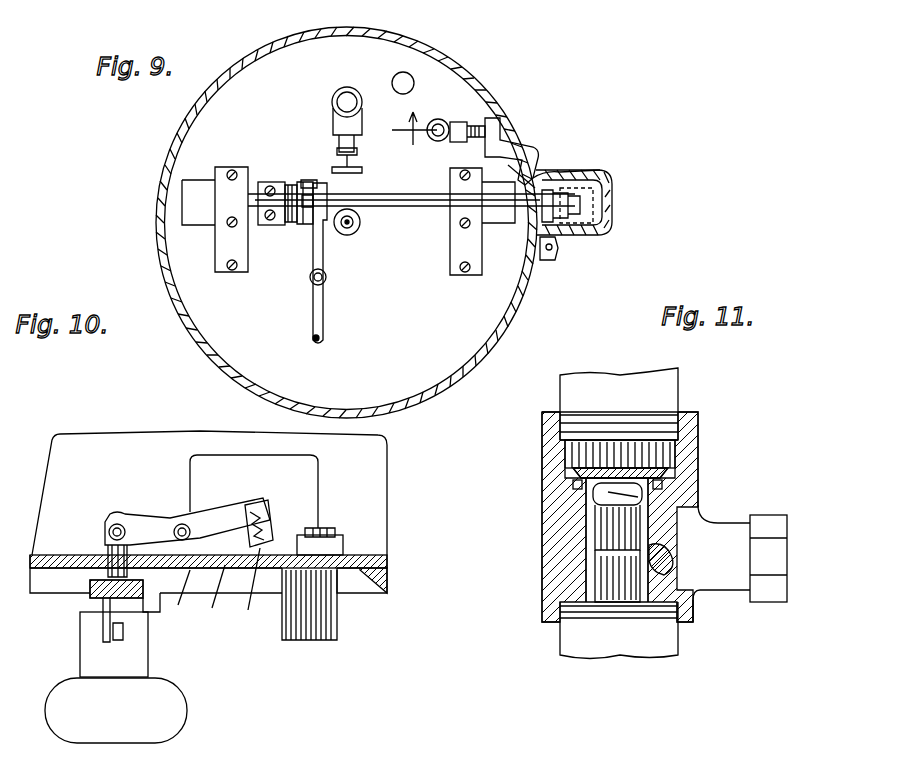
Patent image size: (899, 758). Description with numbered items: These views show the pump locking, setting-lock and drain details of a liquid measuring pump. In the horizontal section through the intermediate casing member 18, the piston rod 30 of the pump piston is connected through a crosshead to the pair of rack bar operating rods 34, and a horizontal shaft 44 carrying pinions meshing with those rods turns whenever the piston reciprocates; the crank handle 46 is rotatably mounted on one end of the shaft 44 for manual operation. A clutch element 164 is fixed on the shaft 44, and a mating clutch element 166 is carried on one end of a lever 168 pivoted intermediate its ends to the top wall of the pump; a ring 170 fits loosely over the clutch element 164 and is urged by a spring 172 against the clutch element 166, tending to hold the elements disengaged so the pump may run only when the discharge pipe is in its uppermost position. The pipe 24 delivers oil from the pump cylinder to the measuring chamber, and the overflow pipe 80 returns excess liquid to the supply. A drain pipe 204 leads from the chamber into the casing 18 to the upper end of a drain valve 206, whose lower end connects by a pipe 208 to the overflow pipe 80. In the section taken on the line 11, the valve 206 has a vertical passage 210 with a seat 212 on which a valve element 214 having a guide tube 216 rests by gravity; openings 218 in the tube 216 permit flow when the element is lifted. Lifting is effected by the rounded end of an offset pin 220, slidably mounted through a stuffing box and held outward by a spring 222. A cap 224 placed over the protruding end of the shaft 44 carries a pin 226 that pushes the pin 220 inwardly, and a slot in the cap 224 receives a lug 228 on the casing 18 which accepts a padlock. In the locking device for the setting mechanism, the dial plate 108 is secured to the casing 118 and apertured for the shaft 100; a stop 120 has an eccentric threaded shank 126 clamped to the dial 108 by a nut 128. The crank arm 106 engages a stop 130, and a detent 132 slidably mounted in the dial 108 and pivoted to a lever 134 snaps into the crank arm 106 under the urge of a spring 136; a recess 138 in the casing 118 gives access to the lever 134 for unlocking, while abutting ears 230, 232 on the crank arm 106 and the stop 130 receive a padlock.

In FIG. 9, the intermediate casing member 18 is at (444, 390).
In FIG. 9, the pipe 24 is at (340, 100).
In FIG. 9, the overflow pipe 80 is at (395, 76).
In FIG. 9, the section line 11 is at (404, 128).
In FIG. 9, the rack bar operating rods 34 is at (228, 224).
In FIG. 9, the horizontal shaft 44 is at (405, 208).
In FIG. 9, the spring 172 is at (283, 226).
In FIG. 9, the clutch element 164 is at (308, 182).
In FIG. 9, the ring 170 is at (316, 180).
In FIG. 9, the mating clutch element 166 is at (318, 200).
In FIG. 9, the lever 168 is at (315, 300).
In FIG. 9, the piston rod 30 is at (347, 235).
In FIG. 9, the drain valve 206 is at (440, 122).
In FIG. 11, the drain valve 206 is at (555, 533).
In FIG. 9, the drain pipe 204 is at (452, 124).
In FIG. 11, the drain pipe 204 is at (660, 386).
In FIG. 9, the spring 222 is at (492, 135).
In FIG. 9, the pin 220 is at (520, 153).
In FIG. 11, the pin 220 is at (695, 620).
In FIG. 9, the pin 226 is at (567, 176).
In FIG. 9, the crank handle 46 is at (592, 190).
In FIG. 9, the cap 224 is at (595, 210).
In FIG. 9, the lug 228 is at (559, 249).
In FIG. 10, the casing 118 is at (388, 520).
In FIG. 10, the lever 134 is at (149, 524).
In FIG. 10, the recess 138 is at (245, 506).
In FIG. 10, the detent 132 is at (108, 545).
In FIG. 10, the crank arm 106 is at (92, 592).
In FIG. 10, the shank 126 is at (322, 530).
In FIG. 10, the nut 128 is at (344, 548).
In FIG. 10, the stop pin 120 is at (338, 614).
In FIG. 10, the stop 130 is at (182, 602).
In FIG. 10, the dial plate 108 is at (213, 602).
In FIG. 10, the spring 136 is at (247, 595).
In FIG. 10, the shaft 100 is at (184, 685).
In FIG. 10, the ear 230 is at (103, 618).
In FIG. 10, the ear 232 is at (118, 640).
In FIG. 11, the valve element 214 is at (640, 468).
In FIG. 11, the seat 212 is at (578, 484).
In FIG. 11, the openings 218 is at (643, 493).
In FIG. 11, the guide tube 216 is at (592, 512).
In FIG. 11, the vertical passage 210 is at (600, 565).
In FIG. 11, the pipe 208 is at (578, 640).